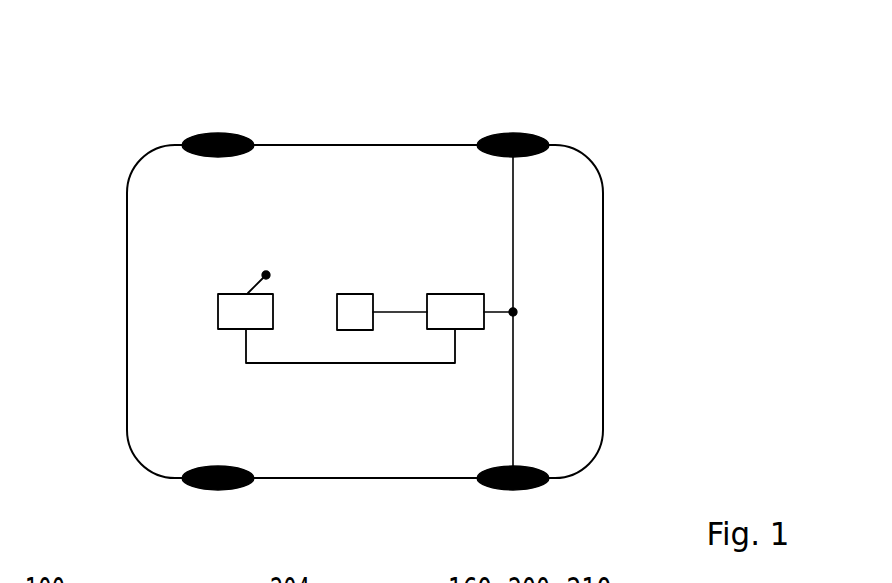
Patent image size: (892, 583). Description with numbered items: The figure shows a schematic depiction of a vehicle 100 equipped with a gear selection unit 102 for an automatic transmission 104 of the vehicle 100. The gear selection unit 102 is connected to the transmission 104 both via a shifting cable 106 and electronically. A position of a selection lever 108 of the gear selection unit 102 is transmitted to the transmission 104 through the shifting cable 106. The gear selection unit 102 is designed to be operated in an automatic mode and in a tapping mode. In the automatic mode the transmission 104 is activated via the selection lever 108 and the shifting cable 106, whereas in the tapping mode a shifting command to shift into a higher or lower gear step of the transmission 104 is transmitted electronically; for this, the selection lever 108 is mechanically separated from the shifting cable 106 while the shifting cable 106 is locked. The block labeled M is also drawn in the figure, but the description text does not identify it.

The vehicle 100 is at (127, 250).
The gear selection unit 102 is at (218, 305).
The automatic transmission 104 is at (484, 295).
The shifting cable 106 is at (310, 363).
The selection lever 108 is at (257, 284).
The electric motor M is at (358, 294).